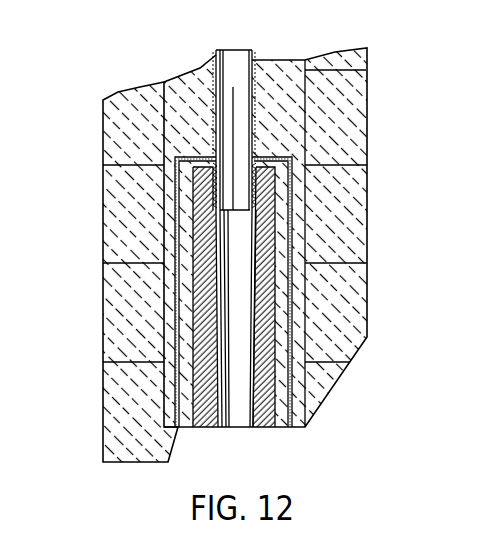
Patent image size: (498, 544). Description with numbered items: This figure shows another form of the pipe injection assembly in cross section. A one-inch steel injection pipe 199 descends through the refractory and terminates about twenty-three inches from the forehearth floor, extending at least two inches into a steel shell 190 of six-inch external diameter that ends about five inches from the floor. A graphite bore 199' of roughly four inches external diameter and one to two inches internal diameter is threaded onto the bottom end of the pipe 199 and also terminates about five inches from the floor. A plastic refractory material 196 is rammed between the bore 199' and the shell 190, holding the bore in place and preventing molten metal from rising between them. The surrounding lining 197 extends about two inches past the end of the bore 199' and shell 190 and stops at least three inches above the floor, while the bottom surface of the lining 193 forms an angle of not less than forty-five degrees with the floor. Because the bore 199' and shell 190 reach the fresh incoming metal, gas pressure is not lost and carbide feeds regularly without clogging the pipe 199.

The steel shell 190 is at (292, 392).
The lining 193 is at (356, 299).
The plastic refractory material 196 is at (296, 427).
The lining 197 is at (118, 438).
The steel injection pipe 199 is at (262, 117).
The graphite bore 199' is at (243, 335).